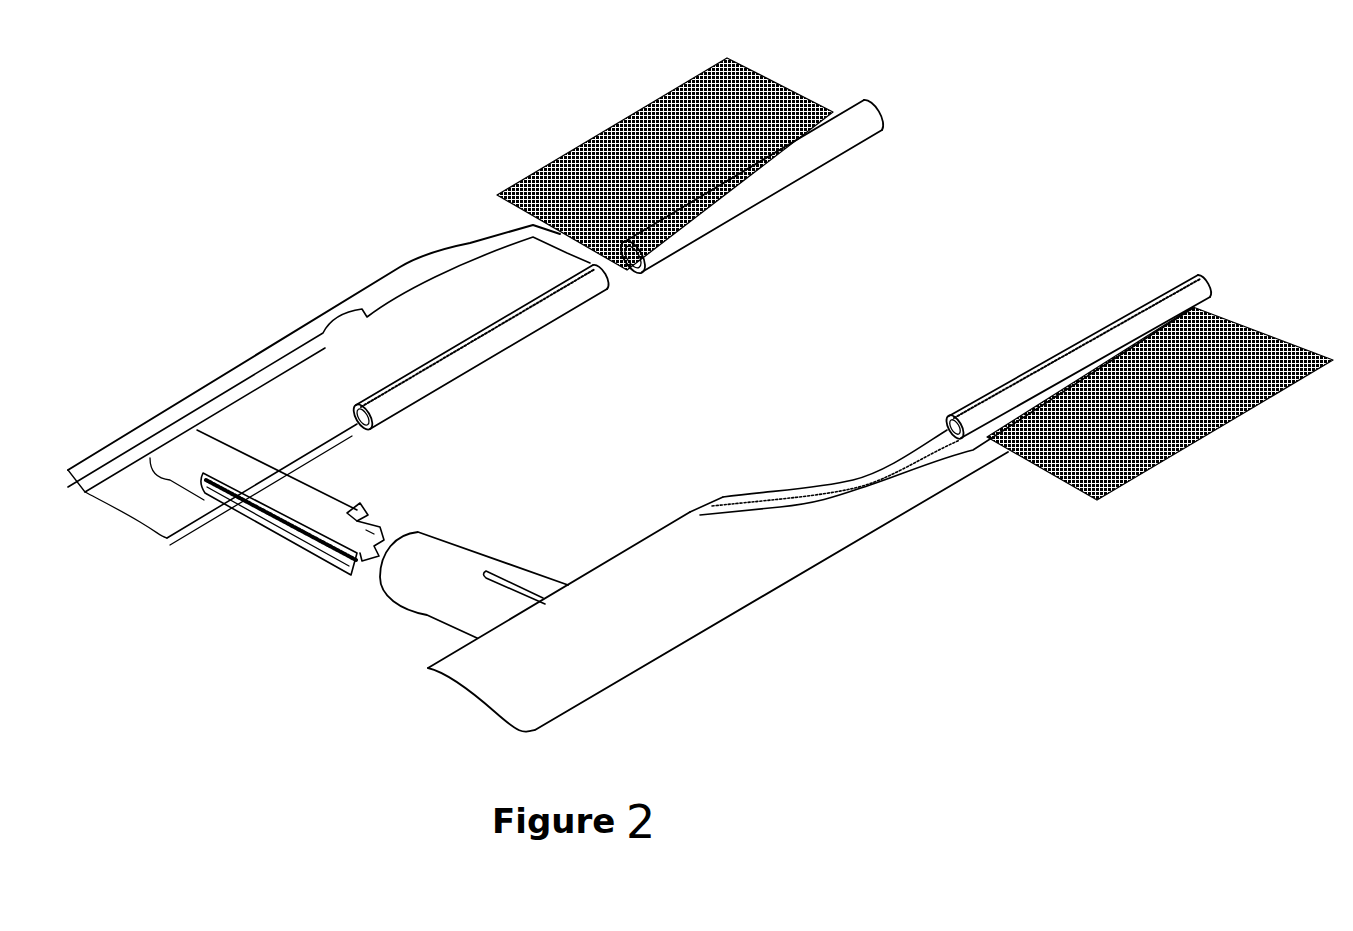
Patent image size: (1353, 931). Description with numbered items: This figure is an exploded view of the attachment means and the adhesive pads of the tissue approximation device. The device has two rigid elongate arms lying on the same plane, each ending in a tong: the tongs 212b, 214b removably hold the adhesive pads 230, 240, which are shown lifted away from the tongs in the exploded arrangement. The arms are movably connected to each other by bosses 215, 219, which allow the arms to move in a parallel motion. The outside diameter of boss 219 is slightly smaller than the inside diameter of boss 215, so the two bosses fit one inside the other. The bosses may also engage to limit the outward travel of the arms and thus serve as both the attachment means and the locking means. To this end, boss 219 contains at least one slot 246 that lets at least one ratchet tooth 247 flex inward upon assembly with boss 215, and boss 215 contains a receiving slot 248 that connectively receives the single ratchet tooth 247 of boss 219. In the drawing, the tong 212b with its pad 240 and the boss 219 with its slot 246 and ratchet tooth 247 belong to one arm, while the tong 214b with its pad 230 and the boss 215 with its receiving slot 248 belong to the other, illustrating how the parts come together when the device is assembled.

The tong 212b is at (500, 347).
The tong 214b is at (888, 450).
The boss 215 is at (420, 613).
The boss 219 is at (307, 475).
The adhesive pad 230 is at (1198, 467).
The adhesive pad 240 is at (596, 114).
The slot 246 is at (273, 530).
The ratchet tooth 247 is at (372, 510).
The receiving slot 248 is at (500, 572).